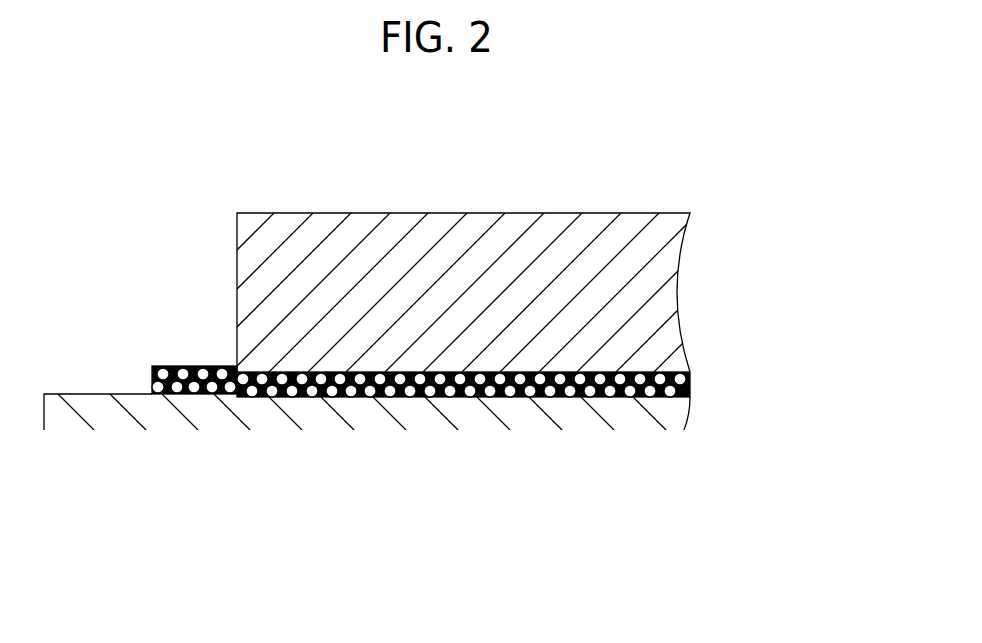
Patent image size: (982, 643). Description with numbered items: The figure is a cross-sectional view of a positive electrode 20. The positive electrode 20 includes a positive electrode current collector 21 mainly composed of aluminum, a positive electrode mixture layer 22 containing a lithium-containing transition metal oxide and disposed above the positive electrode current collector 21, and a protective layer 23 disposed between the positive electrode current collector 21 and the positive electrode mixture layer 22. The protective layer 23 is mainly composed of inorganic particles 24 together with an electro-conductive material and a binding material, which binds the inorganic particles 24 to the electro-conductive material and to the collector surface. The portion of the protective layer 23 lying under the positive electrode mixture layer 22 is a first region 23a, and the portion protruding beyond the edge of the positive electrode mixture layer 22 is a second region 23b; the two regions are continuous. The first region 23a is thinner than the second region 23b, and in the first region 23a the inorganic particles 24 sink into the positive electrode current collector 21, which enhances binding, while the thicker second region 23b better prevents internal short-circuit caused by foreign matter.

The positive electrode 20 is at (658, 138).
The positive electrode current collector 21 is at (95, 413).
The positive electrode mixture layer 22 is at (363, 232).
The protective layer 23 is at (421, 404).
The first region 23a is at (461, 450).
The second region 23b is at (180, 372).
The inorganic particles 24 is at (475, 395).